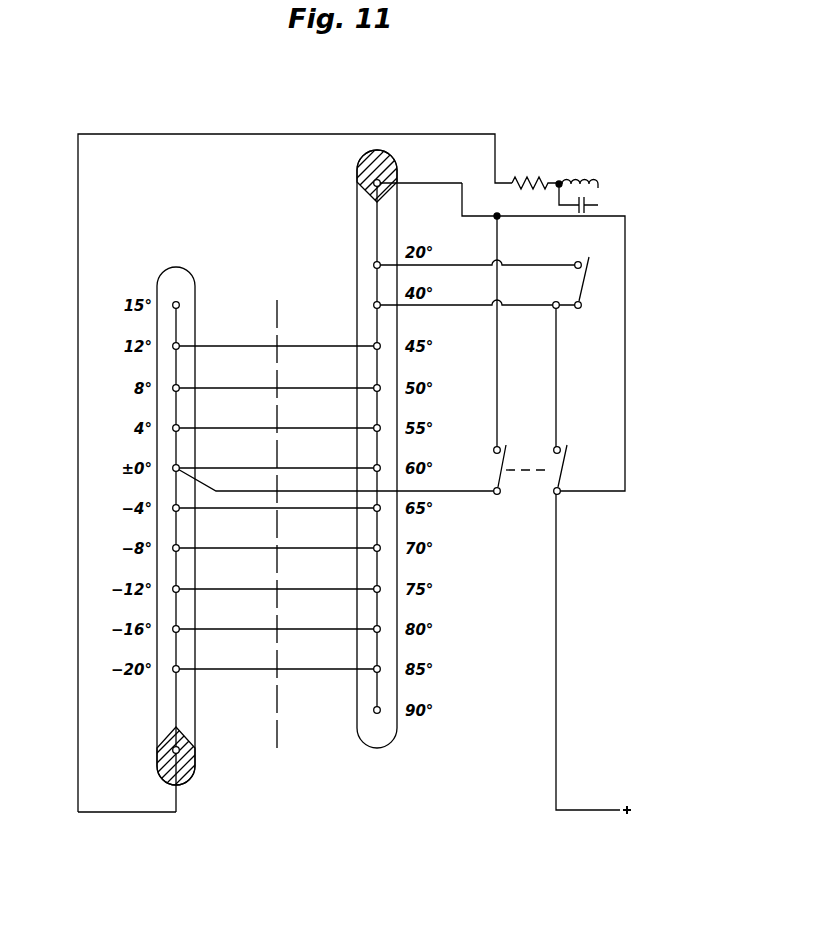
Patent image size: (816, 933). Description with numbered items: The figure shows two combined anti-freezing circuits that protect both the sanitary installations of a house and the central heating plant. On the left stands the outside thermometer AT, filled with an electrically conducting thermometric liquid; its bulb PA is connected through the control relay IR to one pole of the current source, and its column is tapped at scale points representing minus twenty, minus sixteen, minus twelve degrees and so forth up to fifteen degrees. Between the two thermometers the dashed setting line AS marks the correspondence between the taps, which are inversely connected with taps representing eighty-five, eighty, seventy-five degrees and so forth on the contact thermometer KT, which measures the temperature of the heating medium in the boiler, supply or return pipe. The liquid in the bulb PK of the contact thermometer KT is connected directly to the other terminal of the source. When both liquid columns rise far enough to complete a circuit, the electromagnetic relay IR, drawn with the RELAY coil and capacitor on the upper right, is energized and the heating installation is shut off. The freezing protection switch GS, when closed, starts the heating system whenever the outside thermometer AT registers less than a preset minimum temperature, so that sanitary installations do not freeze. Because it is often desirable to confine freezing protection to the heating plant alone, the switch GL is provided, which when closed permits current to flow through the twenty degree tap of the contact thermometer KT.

The outside thermometer AT is at (176, 451).
The setting line AS is at (277, 421).
The contact thermometer KT is at (377, 419).
The bulb of contact thermometer PK is at (406, 185).
The thermometer bulb PA is at (170, 760).
The switch GL is at (583, 282).
The freezing protection switch GS is at (548, 469).
The relay RELAY is at (557, 164).
The control relay IR is at (577, 186).